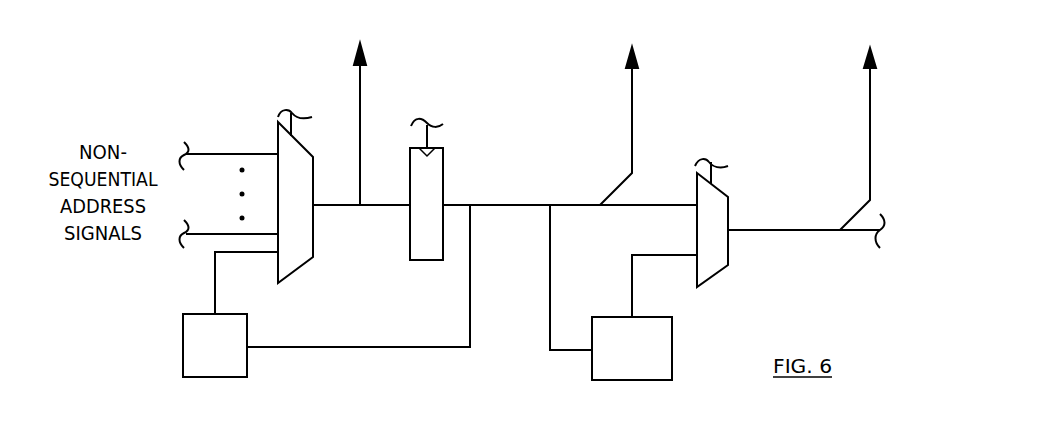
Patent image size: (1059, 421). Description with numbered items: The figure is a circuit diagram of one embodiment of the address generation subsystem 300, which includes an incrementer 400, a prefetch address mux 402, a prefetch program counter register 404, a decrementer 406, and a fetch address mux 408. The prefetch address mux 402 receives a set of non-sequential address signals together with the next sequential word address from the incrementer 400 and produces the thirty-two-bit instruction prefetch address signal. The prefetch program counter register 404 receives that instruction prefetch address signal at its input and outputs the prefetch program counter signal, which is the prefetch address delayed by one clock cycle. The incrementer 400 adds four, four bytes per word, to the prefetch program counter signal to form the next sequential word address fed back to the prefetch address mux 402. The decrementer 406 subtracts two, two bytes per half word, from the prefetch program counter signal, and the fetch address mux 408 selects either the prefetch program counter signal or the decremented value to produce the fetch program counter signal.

The address generation subsystem 300 is at (486, 32).
The incrementer 400 is at (200, 370).
The prefetch address multiplexer 402 is at (297, 268).
The prefetch program counter register 404 is at (429, 260).
The decrementer 406 is at (617, 373).
The fetch address multiplexer 408 is at (713, 278).